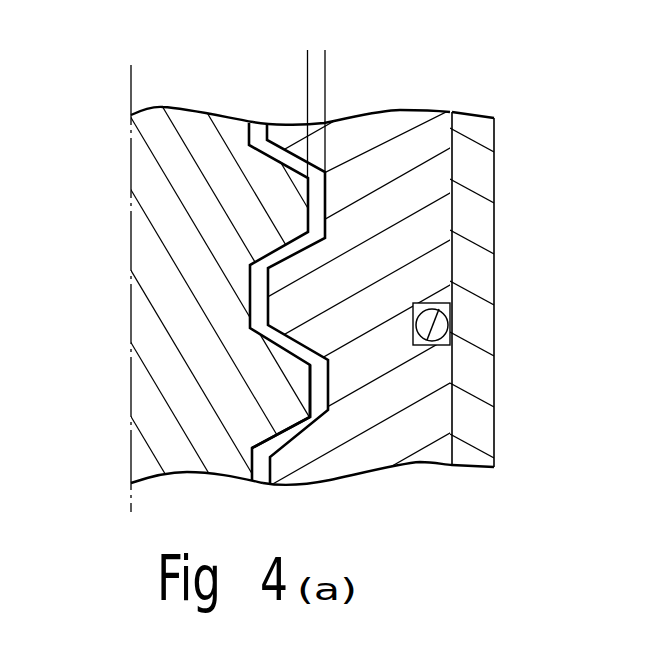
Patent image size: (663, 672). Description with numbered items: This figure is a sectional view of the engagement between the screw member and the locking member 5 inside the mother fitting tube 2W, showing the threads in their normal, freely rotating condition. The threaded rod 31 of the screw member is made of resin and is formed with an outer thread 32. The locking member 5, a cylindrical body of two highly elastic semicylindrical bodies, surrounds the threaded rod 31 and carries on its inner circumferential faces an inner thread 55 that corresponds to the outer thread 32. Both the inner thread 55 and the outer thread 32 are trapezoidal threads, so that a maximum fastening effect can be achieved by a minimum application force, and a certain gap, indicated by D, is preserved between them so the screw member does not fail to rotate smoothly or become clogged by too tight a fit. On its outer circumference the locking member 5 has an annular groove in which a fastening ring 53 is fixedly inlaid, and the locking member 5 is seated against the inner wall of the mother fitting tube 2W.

The threaded rod 31 is at (185, 122).
The locking member 5 is at (425, 133).
The mother fitting tube 2W is at (477, 182).
The fastening ring 53 is at (440, 327).
The outer thread 32 is at (297, 409).
The inner thread 55 is at (328, 383).
The gap width D is at (368, 82).